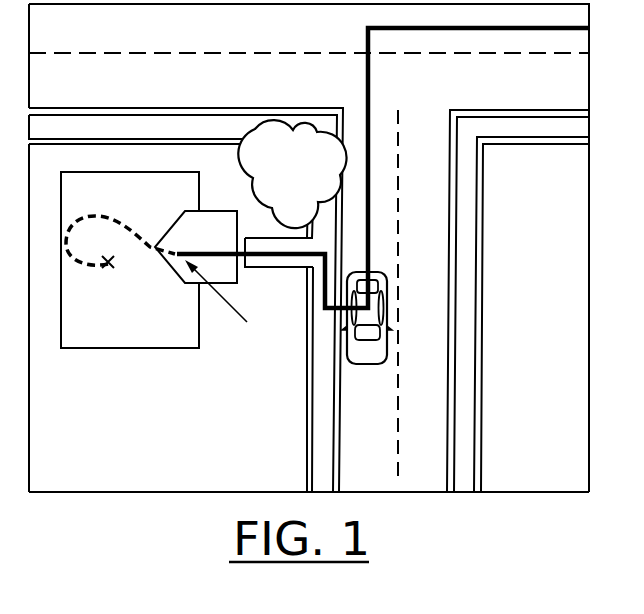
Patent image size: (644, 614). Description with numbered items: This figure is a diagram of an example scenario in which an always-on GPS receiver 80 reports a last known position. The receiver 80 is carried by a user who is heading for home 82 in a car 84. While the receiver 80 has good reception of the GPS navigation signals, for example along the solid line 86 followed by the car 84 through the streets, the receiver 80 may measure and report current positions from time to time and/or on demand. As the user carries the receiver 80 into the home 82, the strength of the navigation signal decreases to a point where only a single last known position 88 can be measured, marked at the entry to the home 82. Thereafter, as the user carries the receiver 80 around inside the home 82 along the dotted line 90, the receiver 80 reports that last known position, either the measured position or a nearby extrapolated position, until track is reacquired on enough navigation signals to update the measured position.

The always-on GPS receiver 80 is at (110, 268).
The home 82 is at (103, 350).
The car 84 is at (368, 365).
The solid line 86 is at (371, 76).
The last known position 88 is at (226, 329).
The dotted line 90 is at (106, 217).